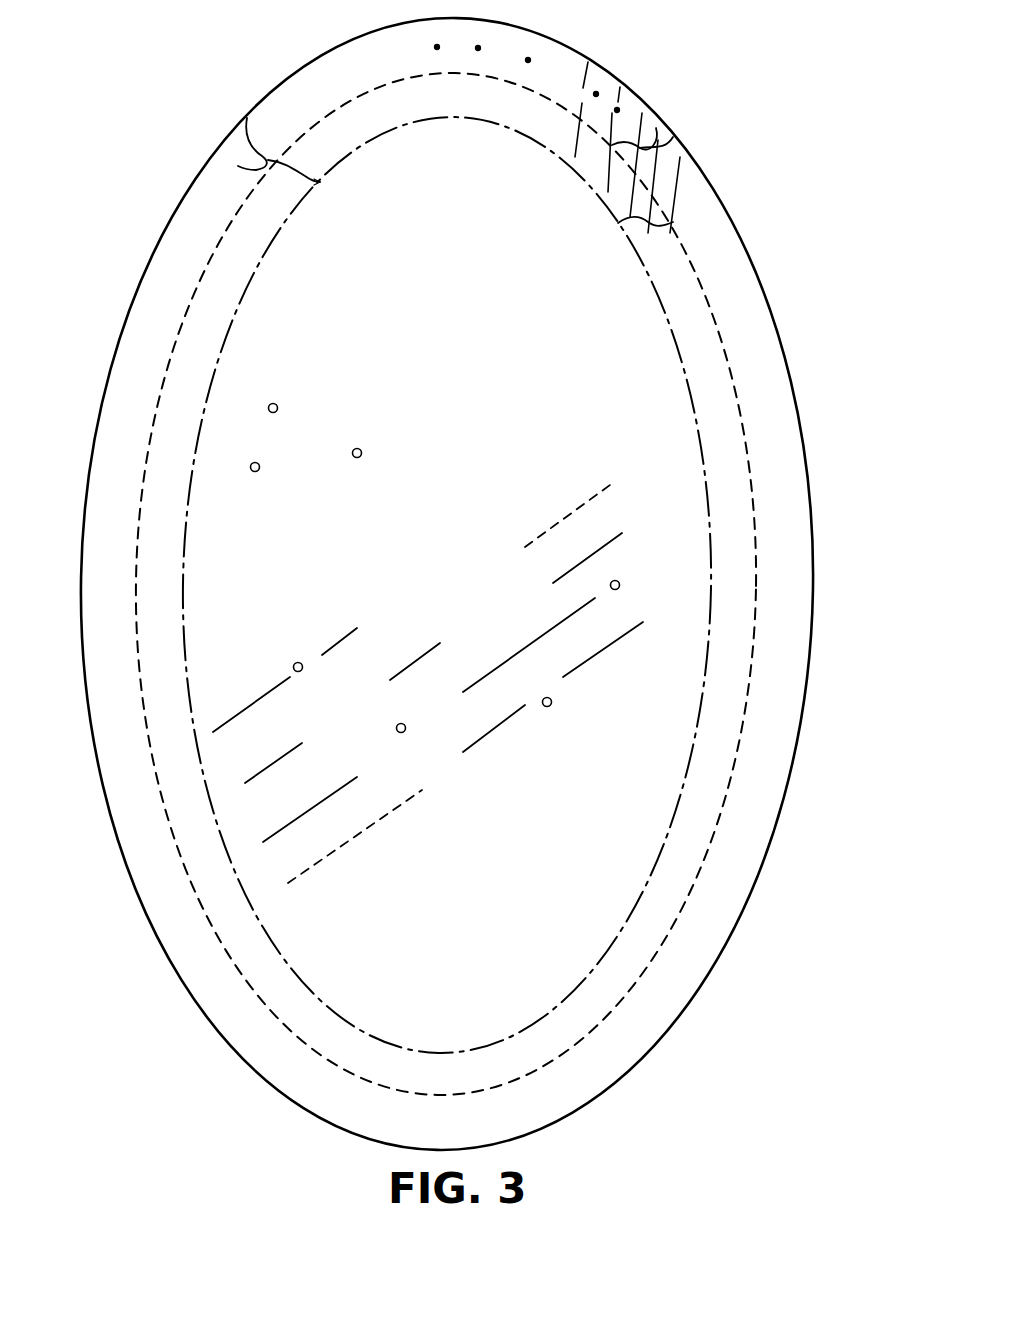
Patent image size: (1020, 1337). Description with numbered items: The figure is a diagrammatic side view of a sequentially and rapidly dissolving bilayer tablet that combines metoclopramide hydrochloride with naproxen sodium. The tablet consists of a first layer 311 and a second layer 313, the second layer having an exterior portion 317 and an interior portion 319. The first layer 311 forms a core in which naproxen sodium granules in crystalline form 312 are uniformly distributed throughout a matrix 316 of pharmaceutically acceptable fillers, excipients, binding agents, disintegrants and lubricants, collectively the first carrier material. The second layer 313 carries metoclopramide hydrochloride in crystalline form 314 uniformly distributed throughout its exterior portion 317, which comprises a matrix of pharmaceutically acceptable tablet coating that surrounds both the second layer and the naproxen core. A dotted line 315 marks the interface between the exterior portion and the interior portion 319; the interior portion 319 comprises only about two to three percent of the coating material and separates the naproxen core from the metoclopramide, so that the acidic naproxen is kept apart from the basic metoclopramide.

The first layer 311 is at (645, 338).
The naproxen sodium granules in crystalline form 312 is at (353, 450).
The second layer 313 is at (238, 166).
The metoclopramide hydrochloride in crystalline form 314 is at (596, 94).
The dotted line 315 is at (747, 437).
The matrix 316 is at (260, 805).
The exterior portion 317 is at (673, 137).
The interior portion 319 is at (673, 222).